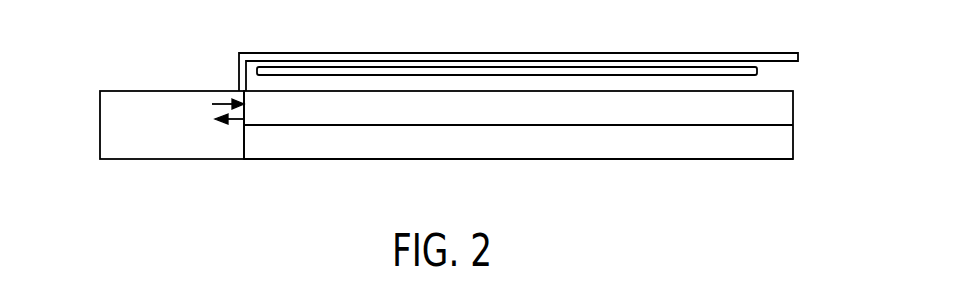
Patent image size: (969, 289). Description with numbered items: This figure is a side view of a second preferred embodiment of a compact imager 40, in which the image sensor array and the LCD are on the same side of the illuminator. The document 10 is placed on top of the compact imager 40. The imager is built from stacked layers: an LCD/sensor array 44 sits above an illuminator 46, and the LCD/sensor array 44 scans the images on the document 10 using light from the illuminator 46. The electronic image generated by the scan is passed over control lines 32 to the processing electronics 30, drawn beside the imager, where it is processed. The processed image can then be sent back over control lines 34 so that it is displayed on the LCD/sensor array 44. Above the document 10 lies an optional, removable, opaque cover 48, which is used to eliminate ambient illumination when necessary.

The document 10 is at (757, 72).
The processing electronics 30 is at (165, 160).
The control lines 32 is at (238, 123).
The control lines 34 is at (226, 97).
The compact imager 40 is at (737, 161).
The LCD/sensor array 44 is at (793, 108).
The illuminator 46 is at (793, 146).
The opaque cover 48 is at (797, 57).